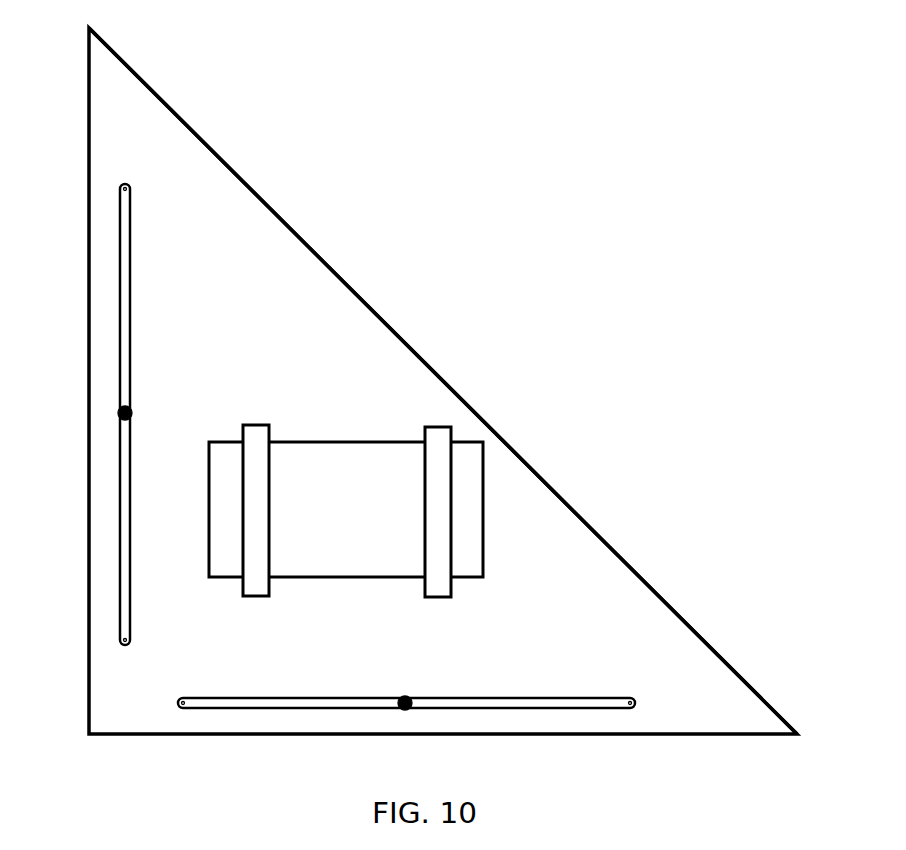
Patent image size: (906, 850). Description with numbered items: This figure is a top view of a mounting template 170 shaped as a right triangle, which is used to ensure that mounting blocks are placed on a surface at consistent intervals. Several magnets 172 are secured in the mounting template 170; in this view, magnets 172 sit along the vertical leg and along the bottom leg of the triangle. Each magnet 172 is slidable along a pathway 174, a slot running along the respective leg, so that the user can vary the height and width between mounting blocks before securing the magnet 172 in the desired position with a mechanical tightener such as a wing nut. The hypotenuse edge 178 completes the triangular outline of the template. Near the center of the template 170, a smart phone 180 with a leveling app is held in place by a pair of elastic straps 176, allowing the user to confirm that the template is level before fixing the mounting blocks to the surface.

The mounting template 170 is at (362, 120).
The magnets 172 is at (119, 417).
The pathway 174 is at (120, 300).
The elastic straps 176 is at (438, 498).
The hypotenuse edge 178 is at (158, 135).
The smart phone 180 is at (294, 478).